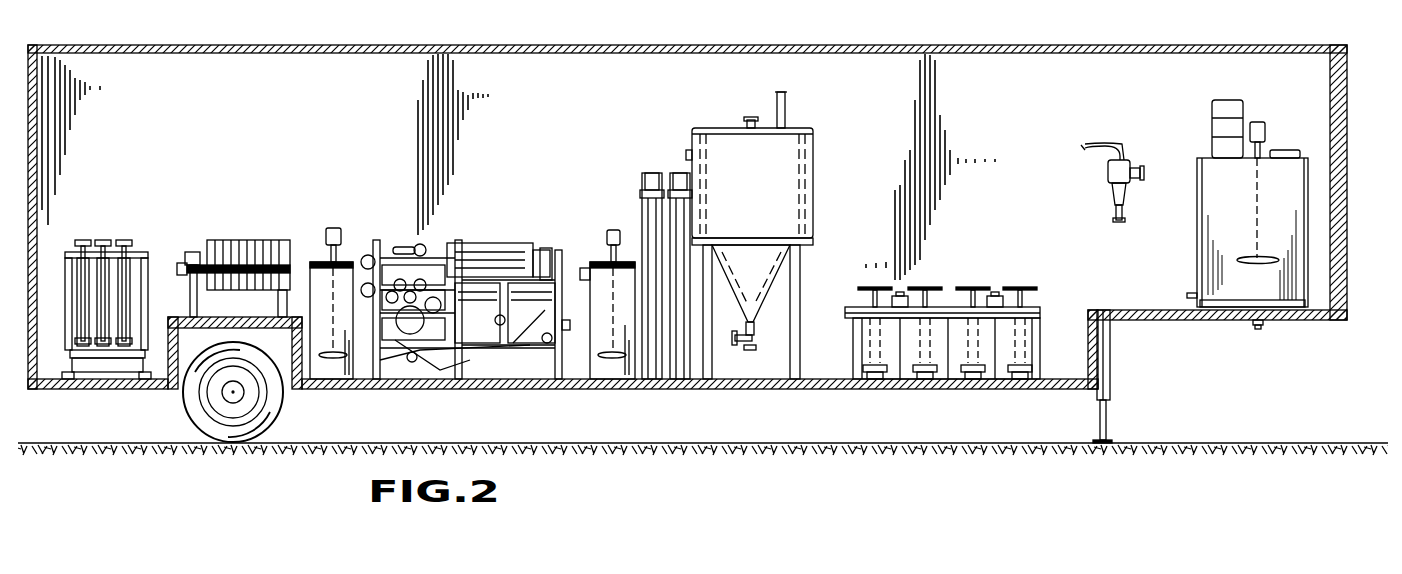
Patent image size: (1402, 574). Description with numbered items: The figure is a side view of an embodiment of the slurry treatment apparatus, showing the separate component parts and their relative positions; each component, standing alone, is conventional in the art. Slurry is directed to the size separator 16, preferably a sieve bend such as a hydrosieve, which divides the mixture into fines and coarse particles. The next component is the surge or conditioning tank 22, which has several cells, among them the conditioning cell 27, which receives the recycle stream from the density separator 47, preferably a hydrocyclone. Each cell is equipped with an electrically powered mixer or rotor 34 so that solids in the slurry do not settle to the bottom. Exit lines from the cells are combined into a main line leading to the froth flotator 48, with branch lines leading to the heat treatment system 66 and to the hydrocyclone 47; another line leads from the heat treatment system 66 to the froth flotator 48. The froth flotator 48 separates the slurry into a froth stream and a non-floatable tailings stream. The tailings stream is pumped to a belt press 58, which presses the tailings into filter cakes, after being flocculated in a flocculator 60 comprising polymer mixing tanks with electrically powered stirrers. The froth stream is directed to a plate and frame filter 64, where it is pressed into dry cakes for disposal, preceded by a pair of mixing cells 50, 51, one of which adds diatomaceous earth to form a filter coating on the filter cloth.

The size separator 16 is at (1214, 116).
The conditioning tank 22 is at (1279, 198).
The conditioning cell 27 is at (1300, 268).
The rotor 34 is at (1262, 217).
The density separator 47 is at (1089, 149).
The froth flotator 48 is at (975, 281).
The mixing cell 50 is at (317, 273).
The mixing cell 51 is at (310, 262).
The belt press 58 is at (493, 241).
The flocculator 60 is at (597, 258).
The plate and frame filter 64 is at (225, 237).
The heat treatment system 66 is at (819, 138).